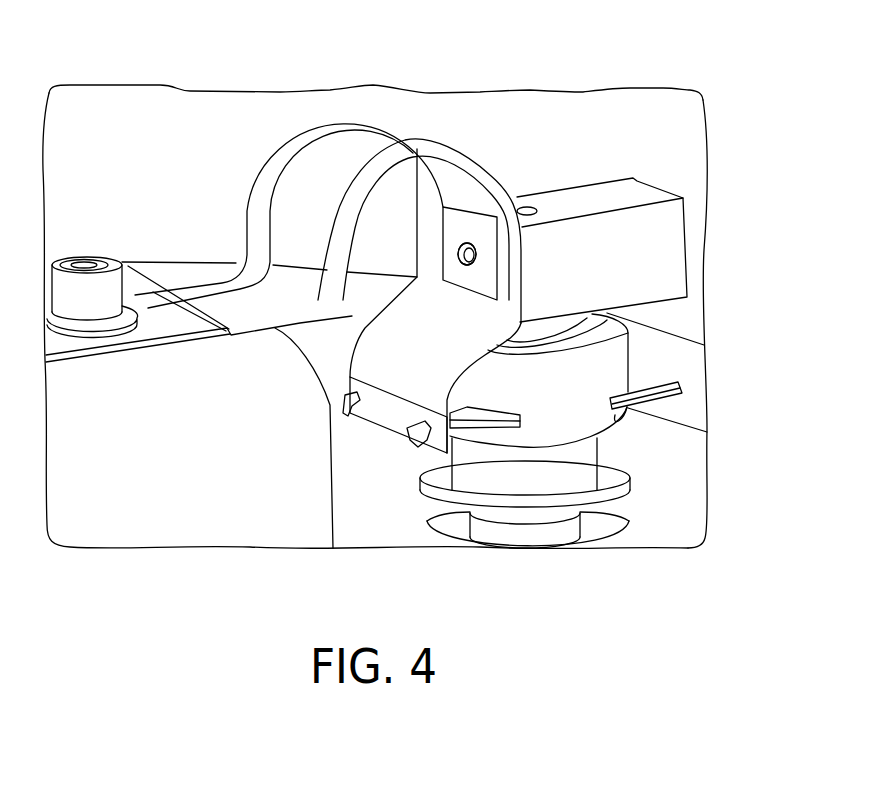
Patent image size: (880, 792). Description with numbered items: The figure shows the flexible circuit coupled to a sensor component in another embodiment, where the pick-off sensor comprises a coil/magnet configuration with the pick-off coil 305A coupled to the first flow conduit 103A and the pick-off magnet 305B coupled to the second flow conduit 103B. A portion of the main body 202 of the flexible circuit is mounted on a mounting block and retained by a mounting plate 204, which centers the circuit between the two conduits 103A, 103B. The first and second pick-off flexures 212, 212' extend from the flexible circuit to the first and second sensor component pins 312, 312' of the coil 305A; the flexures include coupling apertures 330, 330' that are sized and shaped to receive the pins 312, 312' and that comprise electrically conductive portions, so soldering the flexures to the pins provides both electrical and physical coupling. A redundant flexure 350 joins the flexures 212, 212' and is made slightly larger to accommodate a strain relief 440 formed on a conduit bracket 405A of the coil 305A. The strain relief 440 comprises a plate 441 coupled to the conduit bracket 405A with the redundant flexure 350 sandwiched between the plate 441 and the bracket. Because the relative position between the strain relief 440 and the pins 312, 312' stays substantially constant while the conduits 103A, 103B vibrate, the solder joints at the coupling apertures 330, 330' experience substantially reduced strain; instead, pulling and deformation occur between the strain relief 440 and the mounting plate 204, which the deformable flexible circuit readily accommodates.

The first flow conduit 103A is at (511, 92).
The second flow conduit 103B is at (693, 480).
The main body 202 is at (200, 520).
The mounting plate 204 is at (128, 270).
The first pick-off flexure 212 is at (289, 208).
The second pick-off flexure 212' is at (414, 231).
The pick-off coil 305A is at (620, 358).
The pick-off magnet 305B is at (596, 485).
The first sensor component pin 312 is at (416, 391).
The second sensor component pin 312' is at (685, 405).
The coupling aperture 330 is at (356, 431).
The coupling aperture 330' is at (404, 459).
The redundant flexure 350 is at (417, 288).
The conduit bracket 405A is at (673, 227).
The strain relief 440 is at (493, 221).
The plate 441 is at (488, 285).